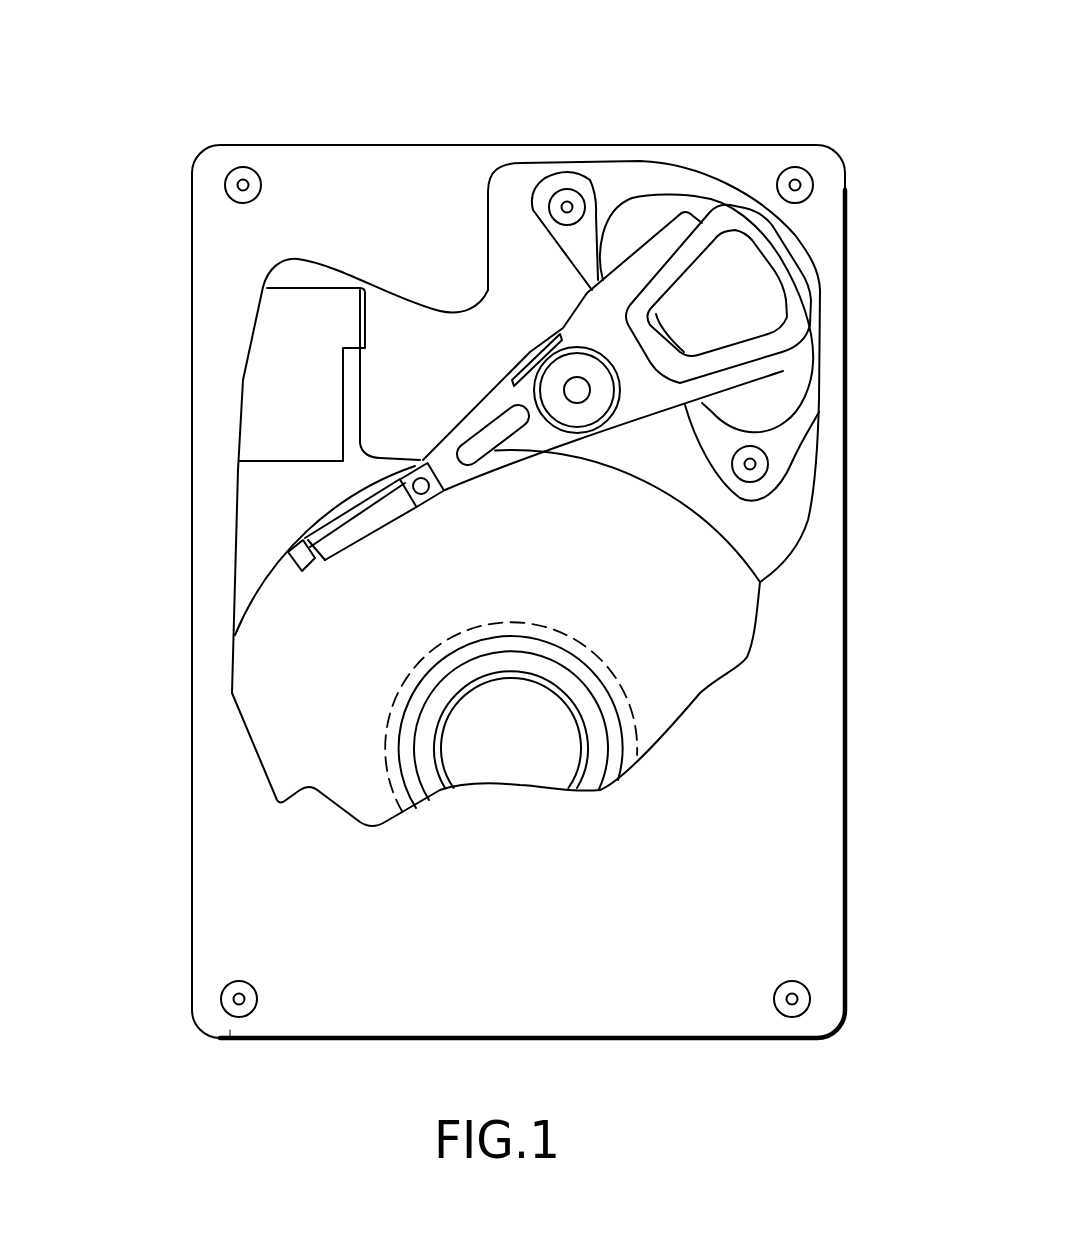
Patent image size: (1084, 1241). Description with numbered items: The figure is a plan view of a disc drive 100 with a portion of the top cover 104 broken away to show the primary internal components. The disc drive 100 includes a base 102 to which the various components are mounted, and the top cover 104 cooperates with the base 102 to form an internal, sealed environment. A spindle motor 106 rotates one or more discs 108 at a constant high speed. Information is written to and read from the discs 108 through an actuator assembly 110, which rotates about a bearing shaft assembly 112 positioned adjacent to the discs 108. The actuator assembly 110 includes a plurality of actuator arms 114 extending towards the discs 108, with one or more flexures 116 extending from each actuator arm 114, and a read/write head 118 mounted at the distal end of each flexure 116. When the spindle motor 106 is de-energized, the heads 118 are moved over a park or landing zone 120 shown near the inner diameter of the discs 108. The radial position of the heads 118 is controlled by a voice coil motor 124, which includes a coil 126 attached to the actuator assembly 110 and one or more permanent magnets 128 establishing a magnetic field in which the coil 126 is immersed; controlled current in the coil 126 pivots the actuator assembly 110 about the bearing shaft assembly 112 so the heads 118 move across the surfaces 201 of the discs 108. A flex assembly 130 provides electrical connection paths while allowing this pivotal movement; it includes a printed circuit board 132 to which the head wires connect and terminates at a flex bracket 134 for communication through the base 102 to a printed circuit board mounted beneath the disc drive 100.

The disc drive 100 is at (230, 81).
The base 102 is at (272, 530).
The top cover 104 is at (243, 860).
The spindle motor 106 is at (512, 757).
The disc 108 is at (700, 659).
The actuator assembly 110 is at (562, 488).
The bearing shaft assembly 112 is at (593, 403).
The actuator arm 114 is at (500, 457).
The flexure 116 is at (357, 526).
The read/write head 118 is at (290, 571).
The landing zone 120 is at (385, 744).
The voice coil motor 124 is at (607, 140).
The coil 126 is at (787, 290).
The permanent magnet 128 is at (617, 245).
The flex assembly 130 is at (482, 391).
The printed circuit board 132 is at (534, 366).
The flex bracket 134 is at (287, 388).
The surface of disc 201 is at (648, 626).